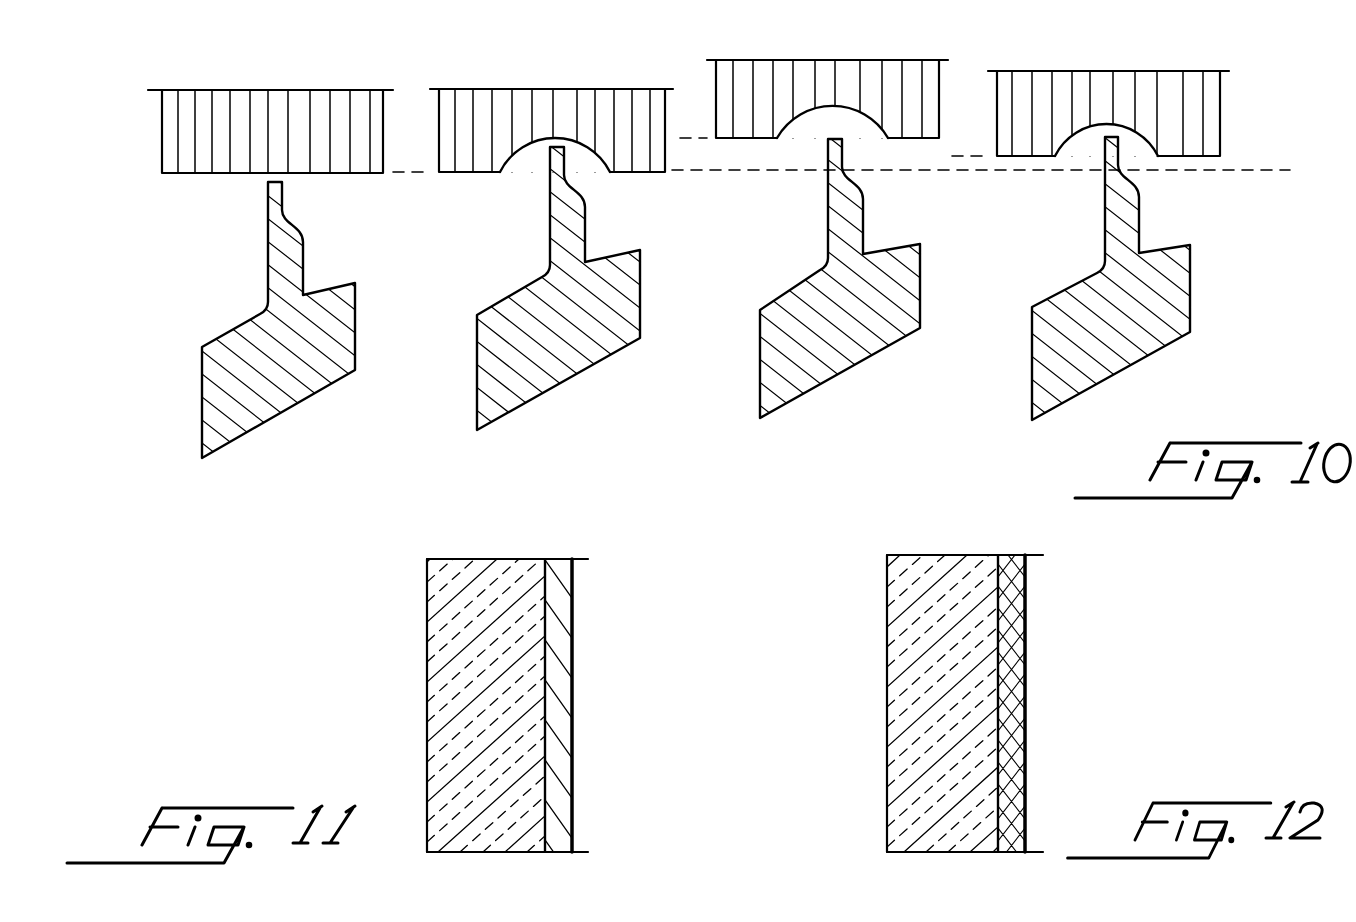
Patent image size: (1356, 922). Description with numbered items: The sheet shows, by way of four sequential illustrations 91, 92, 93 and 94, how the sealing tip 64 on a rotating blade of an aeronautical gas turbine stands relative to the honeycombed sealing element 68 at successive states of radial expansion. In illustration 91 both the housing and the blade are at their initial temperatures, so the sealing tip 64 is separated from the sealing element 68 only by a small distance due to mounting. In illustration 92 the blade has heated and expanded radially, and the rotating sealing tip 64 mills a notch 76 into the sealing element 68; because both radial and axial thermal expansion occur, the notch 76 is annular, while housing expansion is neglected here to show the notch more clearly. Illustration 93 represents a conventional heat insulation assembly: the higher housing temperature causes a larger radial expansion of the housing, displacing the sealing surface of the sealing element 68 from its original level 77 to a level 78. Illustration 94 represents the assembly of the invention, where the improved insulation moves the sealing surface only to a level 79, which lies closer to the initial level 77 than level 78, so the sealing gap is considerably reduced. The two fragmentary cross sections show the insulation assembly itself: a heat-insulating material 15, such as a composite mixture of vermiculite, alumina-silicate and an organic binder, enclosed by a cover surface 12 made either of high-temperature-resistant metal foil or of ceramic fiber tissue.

In FIG. 11, the partial surface of the cover 12 is at (560, 783).
In FIG. 12, the partial surface of the cover 12 is at (1025, 738).
In FIG. 11, the heat-insulating material 15 is at (445, 660).
In FIG. 12, the heat-insulating material 15 is at (887, 590).
In FIG. 10, the sealing tip 64 is at (711, 312).
In FIG. 10, the sealing element 68 is at (280, 90).
In FIG. 10, the notch 76 is at (565, 137).
In FIG. 10, the original level 77 is at (697, 172).
In FIG. 10, the level 78 is at (707, 140).
In FIG. 10, the level 79 is at (960, 155).
In FIG. 10, the illustration 91 is at (324, 394).
In FIG. 10, the illustration 92 is at (576, 378).
In FIG. 10, the illustration 93 is at (843, 375).
In FIG. 10, the illustration 94 is at (1166, 347).